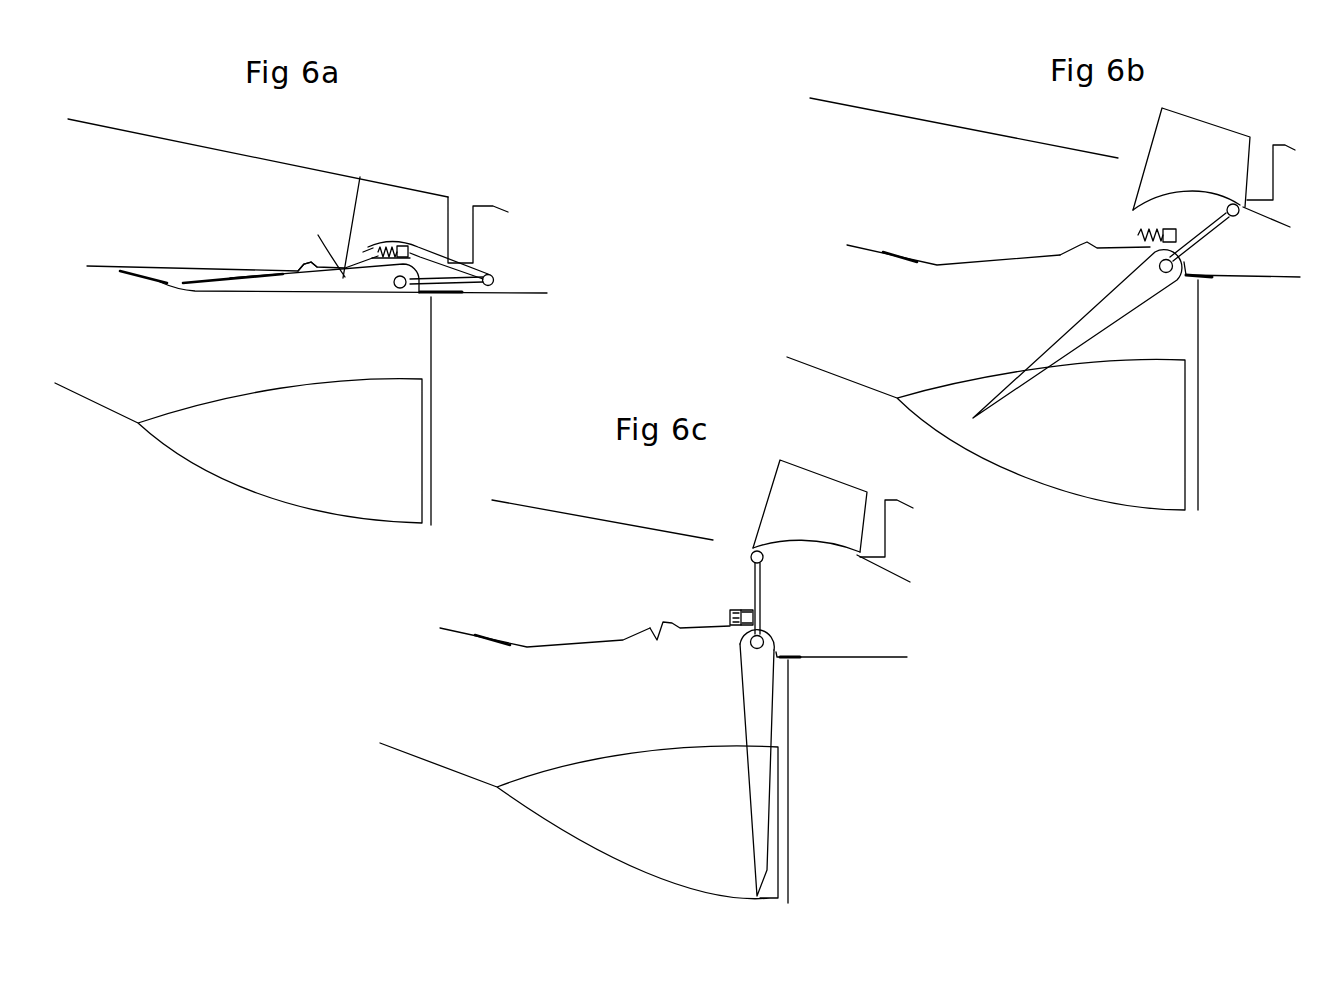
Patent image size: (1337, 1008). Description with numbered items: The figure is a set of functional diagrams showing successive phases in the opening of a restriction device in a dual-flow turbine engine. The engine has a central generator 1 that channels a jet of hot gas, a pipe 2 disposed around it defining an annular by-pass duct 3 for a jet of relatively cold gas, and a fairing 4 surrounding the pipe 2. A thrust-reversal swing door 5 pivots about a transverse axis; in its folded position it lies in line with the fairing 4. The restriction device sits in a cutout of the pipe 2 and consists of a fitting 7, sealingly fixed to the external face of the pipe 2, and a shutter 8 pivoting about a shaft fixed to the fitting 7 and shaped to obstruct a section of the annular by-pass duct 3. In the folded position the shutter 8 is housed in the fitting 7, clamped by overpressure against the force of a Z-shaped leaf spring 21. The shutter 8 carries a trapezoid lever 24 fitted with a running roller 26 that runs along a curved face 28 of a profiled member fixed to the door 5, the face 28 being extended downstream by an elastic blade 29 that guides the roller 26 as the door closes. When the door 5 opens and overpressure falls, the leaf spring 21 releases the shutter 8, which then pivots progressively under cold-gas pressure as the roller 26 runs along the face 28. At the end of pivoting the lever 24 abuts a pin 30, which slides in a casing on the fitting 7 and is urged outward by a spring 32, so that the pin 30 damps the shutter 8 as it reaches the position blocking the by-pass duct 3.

In FIG. 6A, the central generator 1 is at (215, 481).
In FIG. 6A, the pipe 2 is at (98, 265).
In FIG. 6A, the annular by-pass duct 3 is at (134, 334).
In FIG. 6A, the fairing 4 is at (263, 155).
In FIG. 6A, the swing door 5 is at (493, 206).
In FIG. 6B, the swing door 5 is at (1293, 147).
In FIG. 6A, the fitting 7 is at (223, 276).
In FIG. 6B, the fitting 7 is at (985, 260).
In FIG. 6A, the shutter 8 is at (332, 296).
In FIG. 6B, the shutter 8 is at (1105, 323).
In FIG. 6C, the shutter 8 is at (770, 717).
In FIG. 6A, the leaf spring 21 is at (297, 277).
In FIG. 6B, the leaf spring 21 is at (1078, 250).
In FIG. 6A, the lever 24 is at (463, 284).
In FIG. 6B, the lever 24 is at (1199, 237).
In FIG. 6C, the lever 24 is at (762, 597).
In FIG. 6A, the running roller 26 is at (490, 285).
In FIG. 6B, the running roller 26 is at (1240, 217).
In FIG. 6C, the running roller 26 is at (750, 553).
In FIG. 6A, the curved face 28 is at (417, 243).
In FIG. 6B, the curved face 28 is at (1192, 188).
In FIG. 6C, the curved face 28 is at (810, 540).
In FIG. 6A, the elastic blade 29 is at (490, 274).
In FIG. 6A, the pin 30 is at (405, 244).
In FIG. 6B, the pin 30 is at (1157, 235).
In FIG. 6C, the pin 30 is at (748, 612).
In FIG. 6A, the spring 32 is at (347, 253).
In FIG. 6C, the spring 32 is at (730, 620).